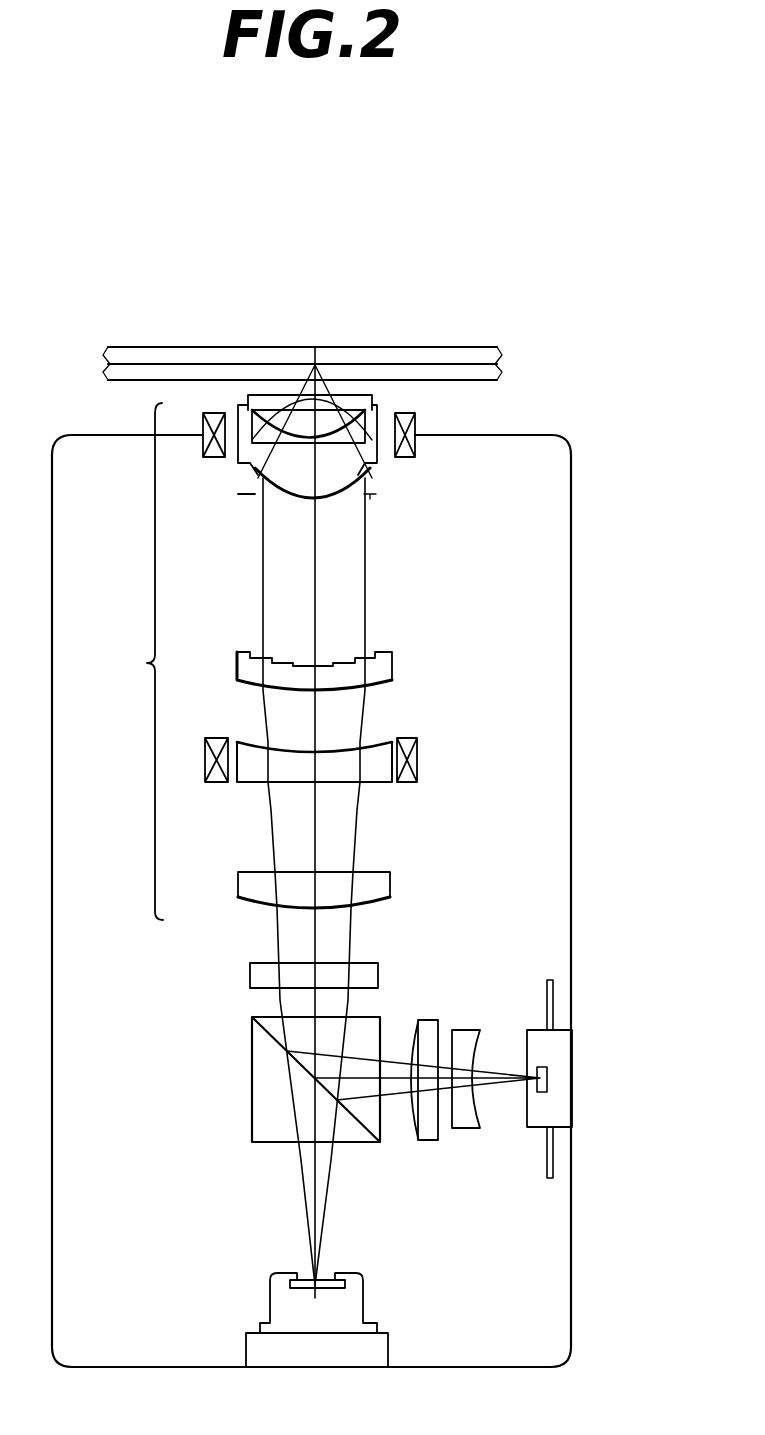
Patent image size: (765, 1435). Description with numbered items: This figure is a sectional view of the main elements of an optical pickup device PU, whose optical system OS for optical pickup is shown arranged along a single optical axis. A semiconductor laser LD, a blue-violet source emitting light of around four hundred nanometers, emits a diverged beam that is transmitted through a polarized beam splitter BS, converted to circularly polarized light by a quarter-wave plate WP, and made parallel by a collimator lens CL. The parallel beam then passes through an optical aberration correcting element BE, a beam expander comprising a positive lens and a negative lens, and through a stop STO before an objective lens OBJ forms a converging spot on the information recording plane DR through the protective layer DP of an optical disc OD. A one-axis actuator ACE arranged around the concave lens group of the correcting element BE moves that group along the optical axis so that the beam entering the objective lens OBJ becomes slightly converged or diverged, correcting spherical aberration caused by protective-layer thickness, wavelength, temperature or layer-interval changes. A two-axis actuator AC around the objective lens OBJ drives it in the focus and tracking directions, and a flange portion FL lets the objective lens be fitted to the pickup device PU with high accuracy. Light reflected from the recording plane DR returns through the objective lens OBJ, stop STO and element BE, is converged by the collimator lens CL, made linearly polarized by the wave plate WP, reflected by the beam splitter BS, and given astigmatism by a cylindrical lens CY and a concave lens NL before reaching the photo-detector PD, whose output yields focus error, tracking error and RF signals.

The optical disc OD is at (97, 342).
The information recording plane DR is at (497, 357).
The protective layer DP is at (472, 380).
The two-axis actuator AC is at (417, 413).
The objective lens OBJ is at (385, 472).
The flange portion FL is at (262, 465).
The stop STO is at (370, 499).
The optical system for optical pickup OS is at (129, 661).
The optical aberration correcting element BE is at (435, 647).
The one-axis actuator ACE is at (405, 782).
The collimator lens CL is at (390, 878).
The quarter-wave plate WP is at (378, 972).
The polarized beam splitter BS is at (252, 1075).
The photo-detector PD is at (575, 1093).
The cylindrical lens CY is at (425, 1140).
The concave lens NL is at (465, 1130).
The semiconductor laser LD is at (350, 1303).
The optical pickup device PU is at (571, 718).